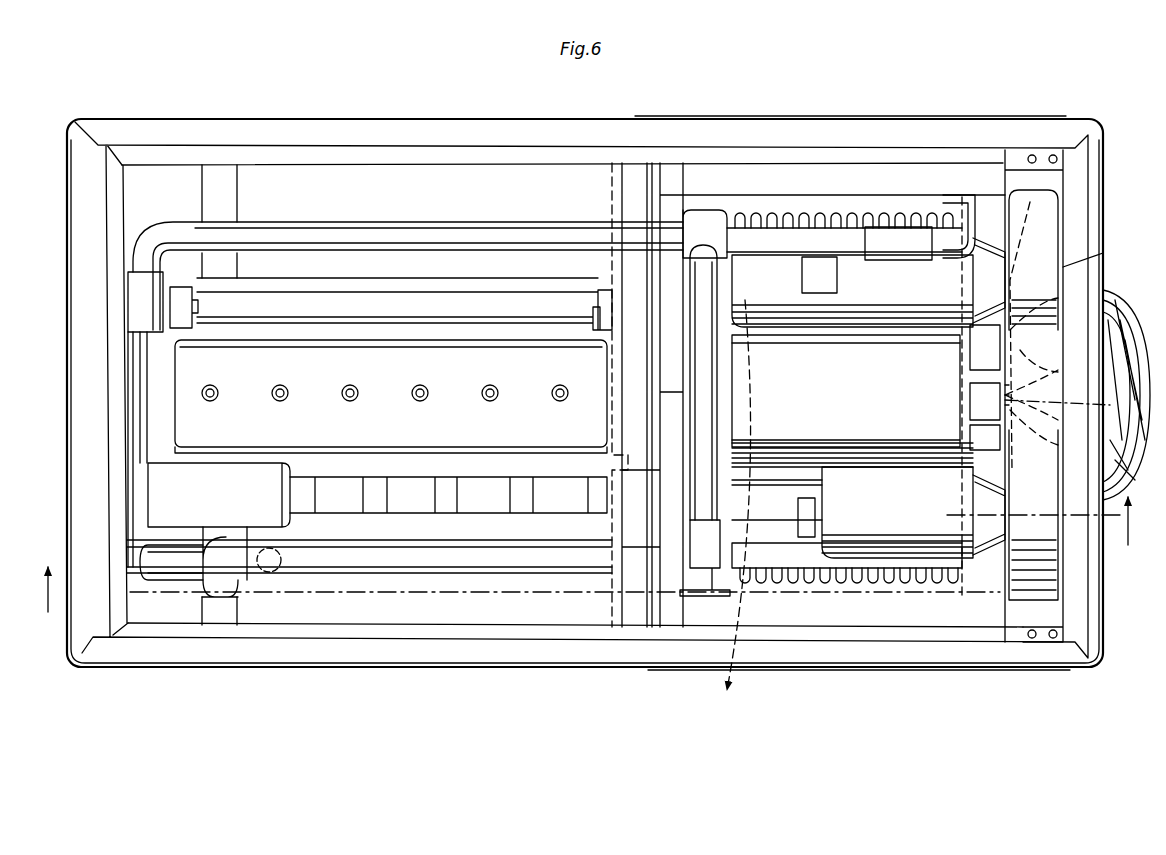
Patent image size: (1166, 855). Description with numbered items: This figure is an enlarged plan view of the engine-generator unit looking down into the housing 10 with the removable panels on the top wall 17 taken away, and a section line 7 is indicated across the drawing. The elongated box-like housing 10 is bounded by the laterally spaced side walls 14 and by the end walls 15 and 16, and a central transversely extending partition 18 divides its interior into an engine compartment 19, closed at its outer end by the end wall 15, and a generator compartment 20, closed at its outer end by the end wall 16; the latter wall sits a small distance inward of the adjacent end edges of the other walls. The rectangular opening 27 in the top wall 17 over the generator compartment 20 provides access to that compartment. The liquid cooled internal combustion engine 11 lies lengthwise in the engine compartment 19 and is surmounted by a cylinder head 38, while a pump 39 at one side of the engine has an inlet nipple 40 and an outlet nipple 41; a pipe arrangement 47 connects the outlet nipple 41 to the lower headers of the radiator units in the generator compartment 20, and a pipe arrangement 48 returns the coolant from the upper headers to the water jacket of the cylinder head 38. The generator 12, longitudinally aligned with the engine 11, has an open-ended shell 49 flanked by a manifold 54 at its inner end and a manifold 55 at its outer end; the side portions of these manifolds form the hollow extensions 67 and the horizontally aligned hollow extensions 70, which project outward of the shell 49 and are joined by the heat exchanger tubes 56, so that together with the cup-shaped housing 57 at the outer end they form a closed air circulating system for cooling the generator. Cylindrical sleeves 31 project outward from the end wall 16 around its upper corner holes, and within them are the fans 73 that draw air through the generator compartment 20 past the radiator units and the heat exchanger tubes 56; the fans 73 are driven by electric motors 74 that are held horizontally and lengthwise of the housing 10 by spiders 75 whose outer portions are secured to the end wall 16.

The section line 7 is at (590, 495).
The housing 10 is at (420, 118).
The internal combustion engine 11 is at (487, 465).
The generator 12 is at (845, 412).
The side walls 14 is at (558, 120).
The end wall 15 is at (68, 443).
The end wall 16 is at (1006, 408).
The top wall 17 is at (640, 615).
The partition 18 is at (612, 610).
The engine compartment 19 is at (322, 170).
The generator compartment 20 is at (865, 205).
The rectangular opening 27 is at (806, 614).
The cylindrical sleeves 31 is at (1043, 212).
The cylinder head 38 is at (391, 396).
The pump 39 is at (247, 593).
The inlet nipple 40 is at (217, 563).
The outlet nipple 41 is at (273, 553).
The pipe arrangement 47 is at (563, 570).
The pipe arrangement 48 is at (318, 252).
The shell 49 is at (846, 391).
The manifold 54 is at (722, 418).
The manifold 55 is at (968, 376).
The heat exchanger tubes 56 is at (870, 212).
The cup-shaped housing 57 is at (1110, 304).
The hollow extensions 67 is at (722, 527).
The hollow extensions 70 is at (966, 585).
The fans 73 is at (1057, 336).
The electric motors 74 is at (707, 100).
The spiders 75 is at (985, 283).